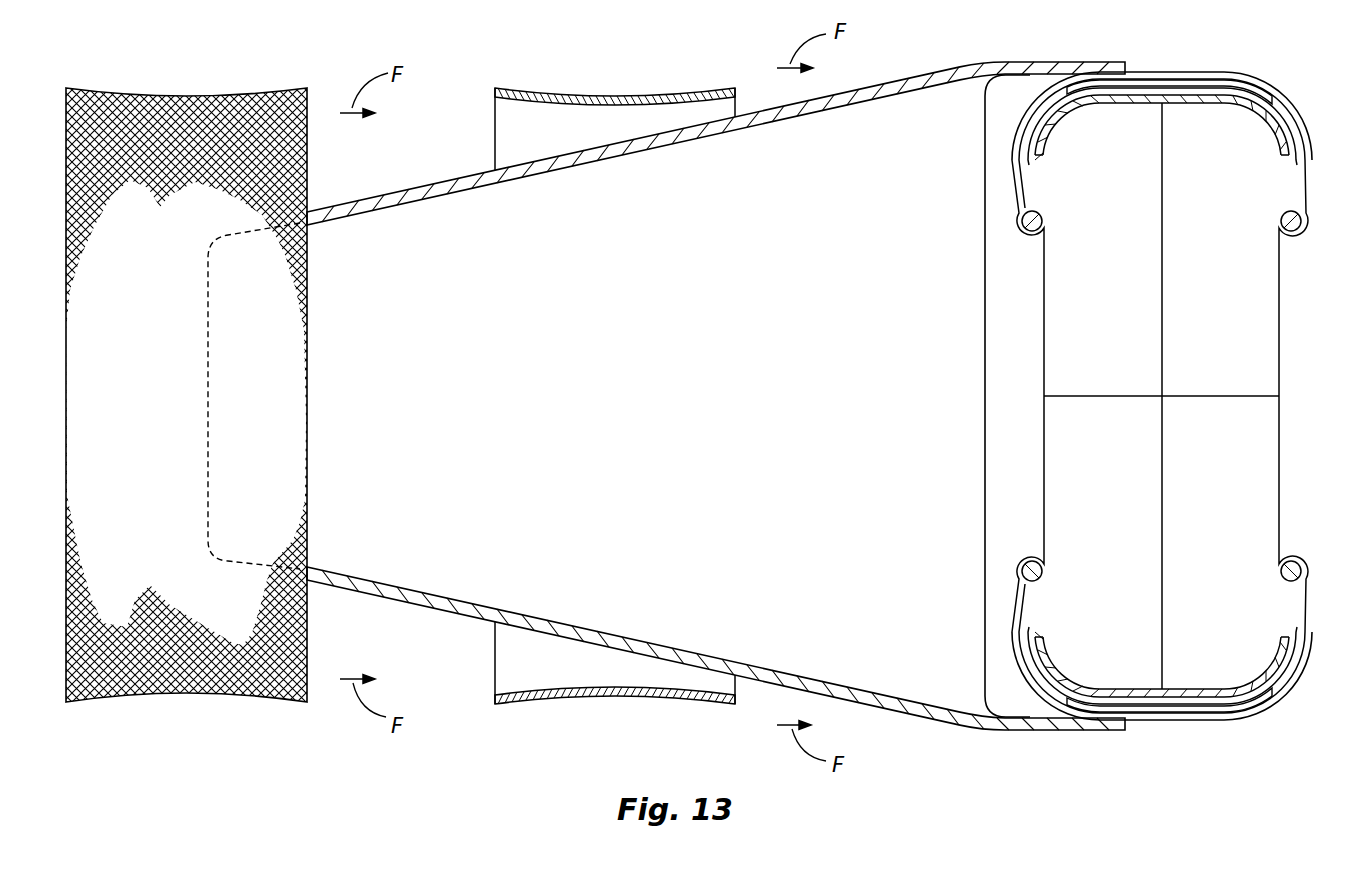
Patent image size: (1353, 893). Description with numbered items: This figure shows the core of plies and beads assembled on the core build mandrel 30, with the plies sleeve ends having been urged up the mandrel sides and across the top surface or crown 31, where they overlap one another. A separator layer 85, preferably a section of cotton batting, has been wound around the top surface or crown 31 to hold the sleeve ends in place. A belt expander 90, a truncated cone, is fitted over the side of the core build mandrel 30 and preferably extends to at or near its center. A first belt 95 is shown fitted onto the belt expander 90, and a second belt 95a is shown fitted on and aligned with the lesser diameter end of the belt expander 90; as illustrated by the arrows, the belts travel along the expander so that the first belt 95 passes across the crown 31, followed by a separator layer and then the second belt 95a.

The core build mandrel 30 is at (1137, 473).
The top surface or crown 31 is at (1215, 73).
The separator layer 85 is at (1270, 91).
The belt expander 90 is at (956, 731).
The first belt 95 is at (612, 96).
The second belt 95a is at (222, 95).